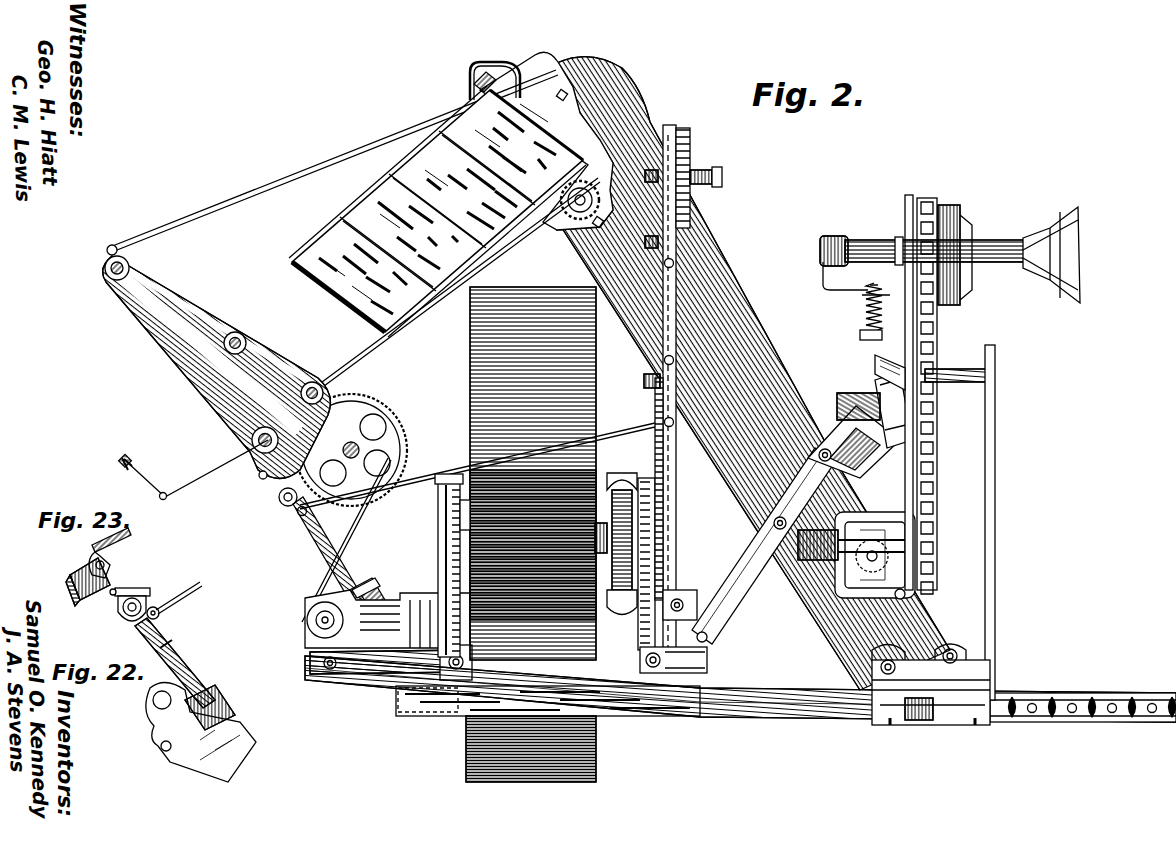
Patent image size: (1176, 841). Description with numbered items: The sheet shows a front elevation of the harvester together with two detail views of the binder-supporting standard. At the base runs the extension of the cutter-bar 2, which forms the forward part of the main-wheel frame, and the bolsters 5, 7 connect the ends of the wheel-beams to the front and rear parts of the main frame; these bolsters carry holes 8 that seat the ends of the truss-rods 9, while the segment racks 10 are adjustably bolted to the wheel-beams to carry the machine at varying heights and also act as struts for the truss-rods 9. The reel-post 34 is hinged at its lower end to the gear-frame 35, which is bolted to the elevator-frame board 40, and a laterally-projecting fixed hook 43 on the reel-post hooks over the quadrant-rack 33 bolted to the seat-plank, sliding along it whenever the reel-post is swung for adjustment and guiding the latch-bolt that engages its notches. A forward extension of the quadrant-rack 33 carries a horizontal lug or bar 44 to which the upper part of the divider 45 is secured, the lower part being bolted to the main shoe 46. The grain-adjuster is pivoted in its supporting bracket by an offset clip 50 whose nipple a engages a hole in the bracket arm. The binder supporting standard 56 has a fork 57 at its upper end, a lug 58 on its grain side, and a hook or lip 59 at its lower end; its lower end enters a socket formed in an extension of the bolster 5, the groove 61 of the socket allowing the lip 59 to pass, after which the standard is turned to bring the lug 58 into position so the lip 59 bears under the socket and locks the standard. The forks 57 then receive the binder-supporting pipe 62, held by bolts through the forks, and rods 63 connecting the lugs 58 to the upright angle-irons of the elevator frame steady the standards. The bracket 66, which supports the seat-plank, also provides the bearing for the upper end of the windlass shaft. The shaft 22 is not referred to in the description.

In FIG. 2, the extension of the cutter-bar 2 is at (740, 689).
In FIG. 2, the bolster 5 is at (388, 626).
In FIG. 2, the bolster 7 is at (698, 666).
In FIG. 2, the holes 8 is at (398, 698).
In FIG. 2, the truss-rods 9 is at (436, 537).
In FIG. 2, the segment racks 10 is at (638, 640).
In FIG. 2, the shaft 22 is at (813, 252).
In FIG. 2, the quadrant-rack 33 is at (872, 360).
In FIG. 2, the reel-post 34 is at (888, 450).
In FIG. 2, the gear-frame 35 is at (856, 555).
In FIG. 2, the elevator-frame board 40 is at (796, 525).
In FIG. 2, the hook 43 is at (862, 335).
In FIG. 2, the horizontal lug or bar 44 is at (940, 372).
In FIG. 2, the divider 45 is at (984, 508).
In FIG. 2, the main shoe 46 is at (535, 60).
In FIG. 2, the clip 50 is at (476, 78).
In FIG. 2, the nipple a is at (486, 66).
In FIG. 22, the binder supporting standard 56 is at (176, 660).
In FIG. 22, the fork 57 is at (142, 590).
In FIG. 2, the lug 58 is at (306, 507).
In FIG. 22, the lug 58 is at (162, 613).
In FIG. 23, the hook or lip 59 is at (112, 556).
In FIG. 22, the hook or lip 59 is at (226, 714).
In FIG. 23, the groove 61 is at (106, 584).
In FIG. 2, the binder-supporting pipe 62 is at (278, 500).
In FIG. 22, the binder-supporting pipe 62 is at (118, 616).
In FIG. 2, the rods 63 is at (420, 482).
In FIG. 22, the rods 63 is at (198, 588).
In FIG. 2, the bracket 66 is at (312, 518).